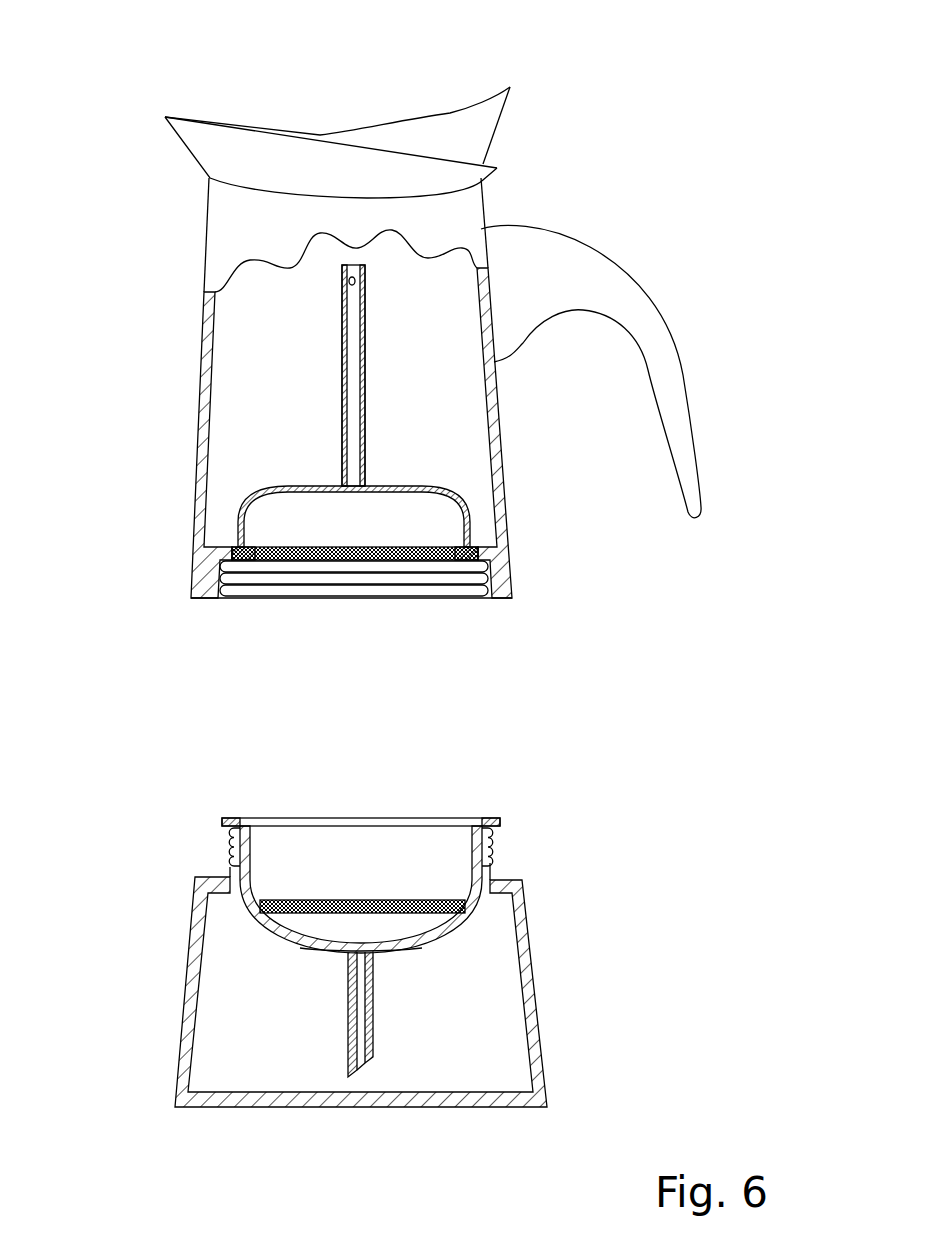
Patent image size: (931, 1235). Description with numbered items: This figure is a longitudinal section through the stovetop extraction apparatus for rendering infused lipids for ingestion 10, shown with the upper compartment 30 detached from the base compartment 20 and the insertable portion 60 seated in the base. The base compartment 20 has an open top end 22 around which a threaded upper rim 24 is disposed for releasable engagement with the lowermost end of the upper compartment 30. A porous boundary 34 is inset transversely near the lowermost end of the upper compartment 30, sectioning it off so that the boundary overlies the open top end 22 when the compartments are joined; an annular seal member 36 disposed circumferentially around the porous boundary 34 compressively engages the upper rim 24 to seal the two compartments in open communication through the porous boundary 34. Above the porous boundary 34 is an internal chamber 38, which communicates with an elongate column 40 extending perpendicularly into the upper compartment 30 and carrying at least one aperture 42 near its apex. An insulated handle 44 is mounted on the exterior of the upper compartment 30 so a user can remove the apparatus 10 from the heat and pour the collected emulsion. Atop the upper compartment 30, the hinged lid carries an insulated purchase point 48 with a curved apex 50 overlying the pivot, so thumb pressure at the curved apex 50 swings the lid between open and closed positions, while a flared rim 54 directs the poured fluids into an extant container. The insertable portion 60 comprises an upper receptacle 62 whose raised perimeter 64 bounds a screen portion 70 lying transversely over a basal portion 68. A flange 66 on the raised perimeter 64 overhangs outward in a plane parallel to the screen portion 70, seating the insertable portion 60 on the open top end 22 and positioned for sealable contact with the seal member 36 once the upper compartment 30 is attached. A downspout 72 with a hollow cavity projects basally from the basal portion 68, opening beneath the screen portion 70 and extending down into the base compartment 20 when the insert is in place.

The stovetop extraction apparatus 10 is at (661, 64).
The base compartment 20 is at (178, 1057).
The open top end 22 is at (202, 808).
The threaded upper rim 24 is at (495, 857).
The upper compartment 30 is at (200, 378).
The porous boundary 34 is at (352, 560).
The annular seal member 36 is at (233, 562).
The internal chamber 38 is at (280, 518).
The elongate column 40 is at (342, 320).
The aperture 42 is at (346, 281).
The insulated handle 44 is at (693, 410).
The insulated purchase point 48 is at (463, 110).
The curved apex 50 is at (511, 88).
The flared rim 54 is at (203, 147).
The insertable portion 60 is at (498, 800).
The upper receptacle 62 is at (422, 798).
The raised perimeter 64 is at (228, 850).
The flange 66 is at (493, 833).
The basal portion 68 is at (440, 943).
The screen portion 70 is at (352, 900).
The downspout 72 is at (348, 1053).